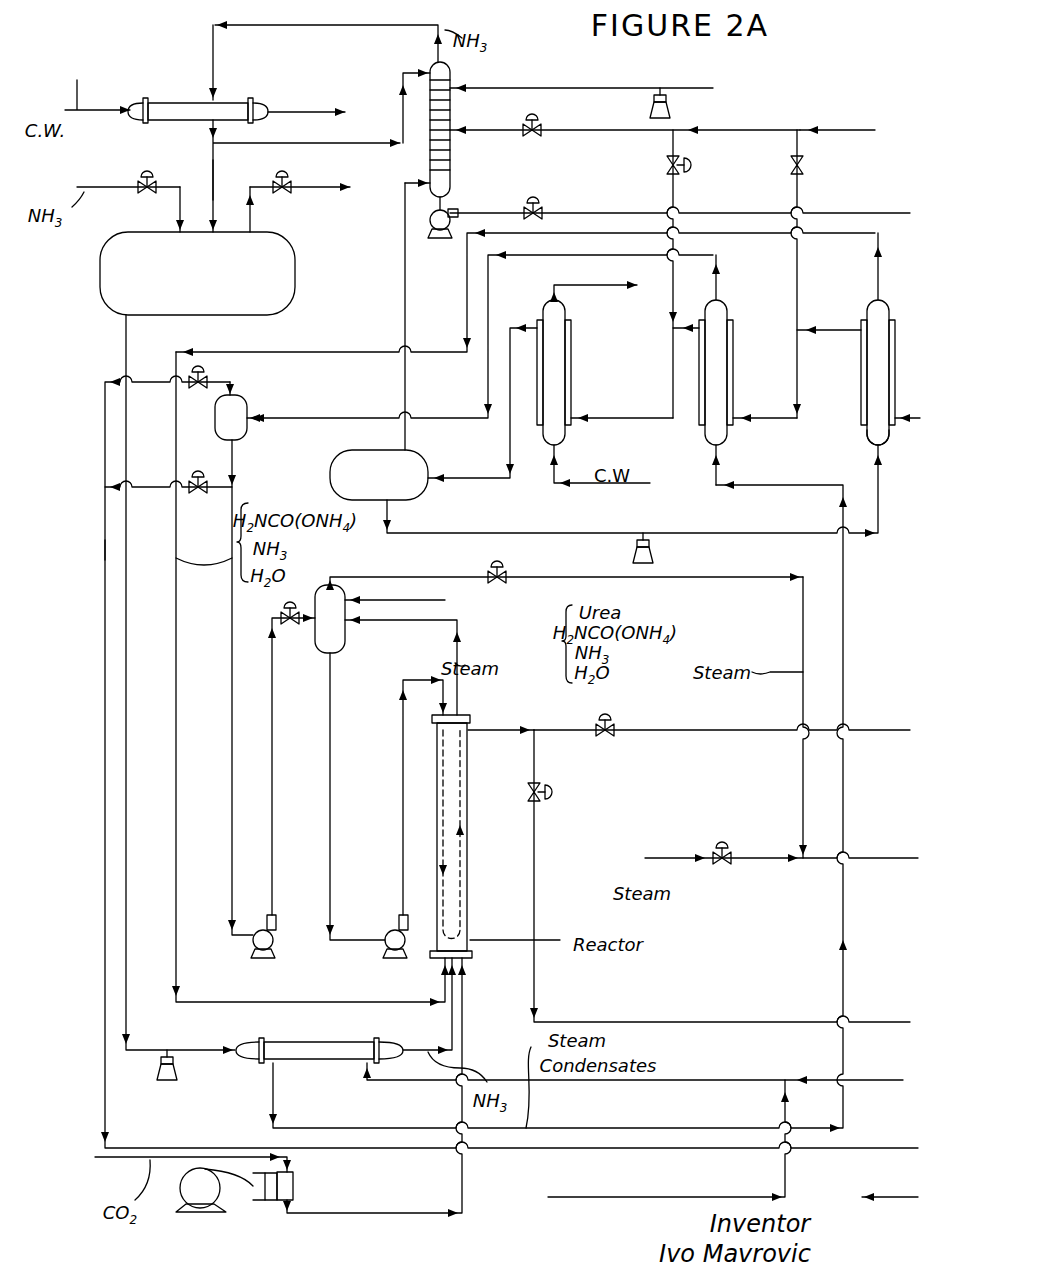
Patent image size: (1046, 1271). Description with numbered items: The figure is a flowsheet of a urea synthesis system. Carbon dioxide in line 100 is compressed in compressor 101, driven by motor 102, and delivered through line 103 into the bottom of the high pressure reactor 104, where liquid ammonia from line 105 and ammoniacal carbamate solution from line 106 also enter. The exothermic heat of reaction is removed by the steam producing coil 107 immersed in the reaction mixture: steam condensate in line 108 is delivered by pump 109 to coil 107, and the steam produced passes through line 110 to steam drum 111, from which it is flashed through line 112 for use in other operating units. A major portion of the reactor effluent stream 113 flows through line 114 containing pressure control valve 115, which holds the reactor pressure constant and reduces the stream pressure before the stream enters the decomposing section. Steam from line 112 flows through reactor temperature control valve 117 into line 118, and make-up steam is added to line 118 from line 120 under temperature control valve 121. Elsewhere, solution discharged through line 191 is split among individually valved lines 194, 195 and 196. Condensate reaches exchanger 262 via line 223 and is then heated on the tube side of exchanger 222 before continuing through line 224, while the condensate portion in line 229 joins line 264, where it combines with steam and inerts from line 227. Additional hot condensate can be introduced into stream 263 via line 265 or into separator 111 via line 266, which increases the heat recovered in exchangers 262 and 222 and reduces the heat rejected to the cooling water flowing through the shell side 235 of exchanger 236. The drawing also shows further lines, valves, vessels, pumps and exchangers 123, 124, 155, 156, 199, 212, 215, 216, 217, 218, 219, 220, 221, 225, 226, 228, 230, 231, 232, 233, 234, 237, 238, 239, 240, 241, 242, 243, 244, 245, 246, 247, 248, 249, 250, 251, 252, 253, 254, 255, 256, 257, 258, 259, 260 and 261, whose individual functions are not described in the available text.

The line 100 is at (116, 1158).
The compressor 101 is at (295, 1188).
The motor 102 is at (204, 1218).
The line 103 is at (440, 1178).
The high pressure reactor 104 is at (468, 908).
The line 105 is at (452, 1007).
The line 106 is at (440, 983).
The steam producing coil 107 is at (459, 810).
The line 108 is at (443, 685).
The pump 109 is at (380, 956).
The line 110 is at (455, 663).
The steam drum 111 is at (342, 652).
The line 112 is at (370, 577).
The stream 113 is at (492, 728).
The line 114 is at (532, 745).
The pressure control valve 115 is at (548, 790).
The reactor temperature control valve 117 is at (503, 586).
The line 118 is at (748, 578).
The line 120 is at (765, 860).
The temperature control valve 121 is at (724, 846).
The line 123 is at (660, 735).
The valve 124 is at (607, 716).
The absorption column 155 is at (453, 182).
The ammonia line 156 is at (178, 210).
The line 191 is at (850, 93).
The individually valved line 194 is at (798, 197).
The individually valved line 195 is at (673, 190).
The individually valved line 196 is at (580, 128).
The line 199 is at (500, 213).
The outlet line 212 is at (878, 1196).
The inlet line 215 is at (910, 420).
The heat exchanger 216 is at (861, 378).
The heat exchanger outlet 217 is at (866, 437).
The line 218 is at (500, 533).
The line 219 is at (835, 328).
The line 220 is at (745, 410).
The heat exchanger 221 is at (735, 345).
The exchanger 222 is at (687, 464).
The line 223 is at (280, 1097).
The line 224 is at (538, 262).
The vessel 225 is at (255, 408).
The valve 226 is at (205, 370).
The line 227 is at (143, 378).
The valve 228 is at (197, 497).
The line 229 is at (140, 486).
The pump 230 is at (262, 960).
The line 231 is at (272, 740).
The valve 232 is at (290, 632).
The line 233 is at (673, 335).
The line 234 is at (612, 415).
The shell side 235 is at (572, 332).
The exchanger 236 is at (568, 440).
The outlet line 237 is at (578, 285).
The line 238 is at (507, 433).
The vessel 239 is at (403, 490).
The relief valve 240 is at (662, 550).
The line 241 is at (404, 279).
The inlet line 242 is at (428, 183).
The column trays 243 is at (452, 150).
The line 244 is at (582, 88).
The relief valve 245 is at (676, 108).
The line 246 is at (425, 73).
The ammonia vapor line 247 is at (280, 25).
The condenser 248 is at (168, 100).
The line 249 is at (230, 100).
The cooling water inlet 250 is at (93, 82).
The cooling water outlet 251 is at (298, 110).
The pump 252 is at (439, 240).
The valve 253 is at (540, 205).
The line 254 is at (211, 134).
The line 255 is at (211, 165).
The ammonia storage tank 256 is at (170, 288).
The valve 257 is at (143, 172).
The valve 258 is at (288, 175).
The line 259 is at (255, 213).
The ammonia line 260 is at (124, 338).
The relief valve 261 is at (167, 1092).
The exchanger 262 is at (305, 1040).
The stream 263 is at (445, 1082).
The line 264 is at (104, 548).
The line 265 is at (784, 1170).
The line 266 is at (447, 602).